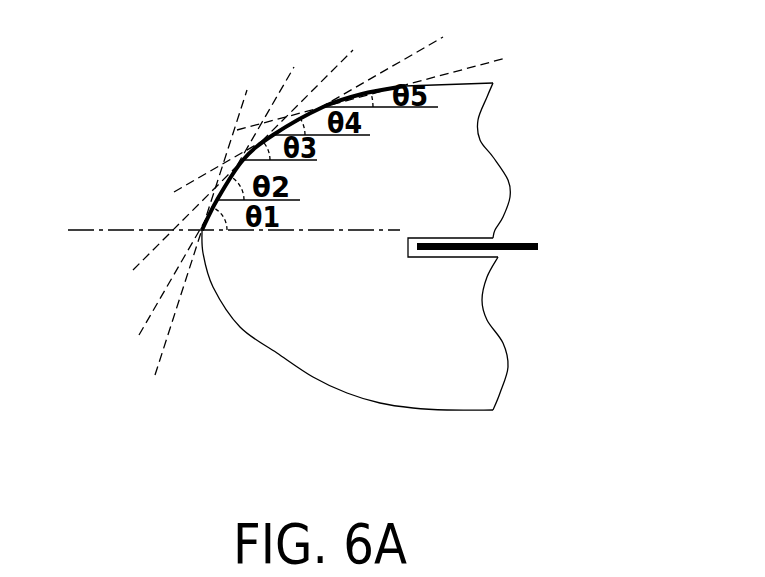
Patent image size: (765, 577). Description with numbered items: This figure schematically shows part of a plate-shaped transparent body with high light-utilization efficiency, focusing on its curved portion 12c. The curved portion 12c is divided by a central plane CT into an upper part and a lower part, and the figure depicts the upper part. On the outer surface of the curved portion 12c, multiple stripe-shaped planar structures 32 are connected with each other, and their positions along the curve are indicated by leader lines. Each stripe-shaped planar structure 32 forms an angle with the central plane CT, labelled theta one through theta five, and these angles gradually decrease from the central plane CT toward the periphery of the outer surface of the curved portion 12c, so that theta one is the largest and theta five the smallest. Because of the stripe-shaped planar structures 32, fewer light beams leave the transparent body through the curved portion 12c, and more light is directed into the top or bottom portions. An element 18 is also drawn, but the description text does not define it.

The stripe-shaped planar structures 32 is at (207, 215).
The blade 18 is at (520, 243).
The curved portion 12c is at (277, 353).
The central plane CT is at (209, 234).